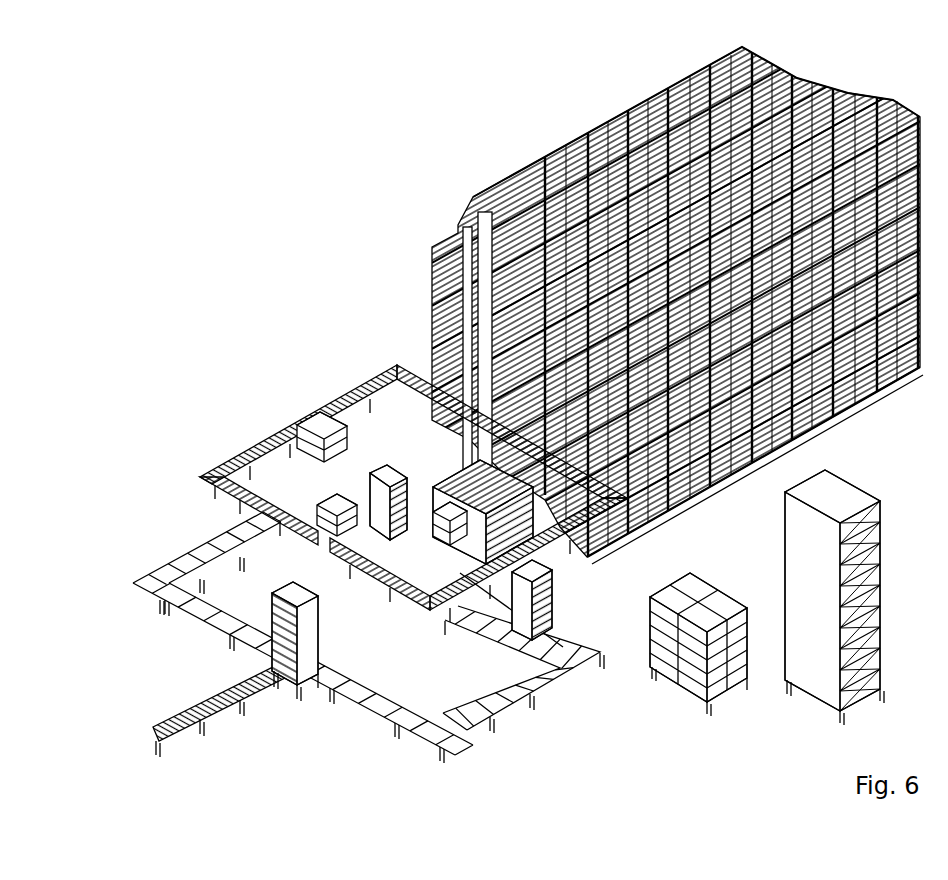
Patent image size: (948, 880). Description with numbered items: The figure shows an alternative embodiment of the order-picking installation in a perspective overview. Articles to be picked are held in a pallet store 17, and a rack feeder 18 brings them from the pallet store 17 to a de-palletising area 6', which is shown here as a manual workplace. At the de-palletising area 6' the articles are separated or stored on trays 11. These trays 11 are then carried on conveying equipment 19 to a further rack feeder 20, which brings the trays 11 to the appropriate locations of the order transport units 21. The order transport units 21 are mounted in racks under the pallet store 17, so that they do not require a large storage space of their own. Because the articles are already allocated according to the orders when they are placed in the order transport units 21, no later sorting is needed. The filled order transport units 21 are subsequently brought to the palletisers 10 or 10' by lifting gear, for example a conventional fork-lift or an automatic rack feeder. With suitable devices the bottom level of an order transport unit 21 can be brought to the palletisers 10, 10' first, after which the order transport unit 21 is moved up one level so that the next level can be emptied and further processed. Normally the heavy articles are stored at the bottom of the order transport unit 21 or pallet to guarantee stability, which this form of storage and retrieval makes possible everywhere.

The de-palletising area 6' is at (304, 467).
The palletiser 10 is at (209, 720).
The palletiser 10' is at (303, 649).
The tray 11 is at (272, 432).
The pallet store 17 is at (553, 148).
The rack feeder 18 is at (477, 240).
The conveying equipment 19 is at (520, 645).
The rack feeder 20 is at (632, 528).
The order transport unit 21 is at (300, 645).